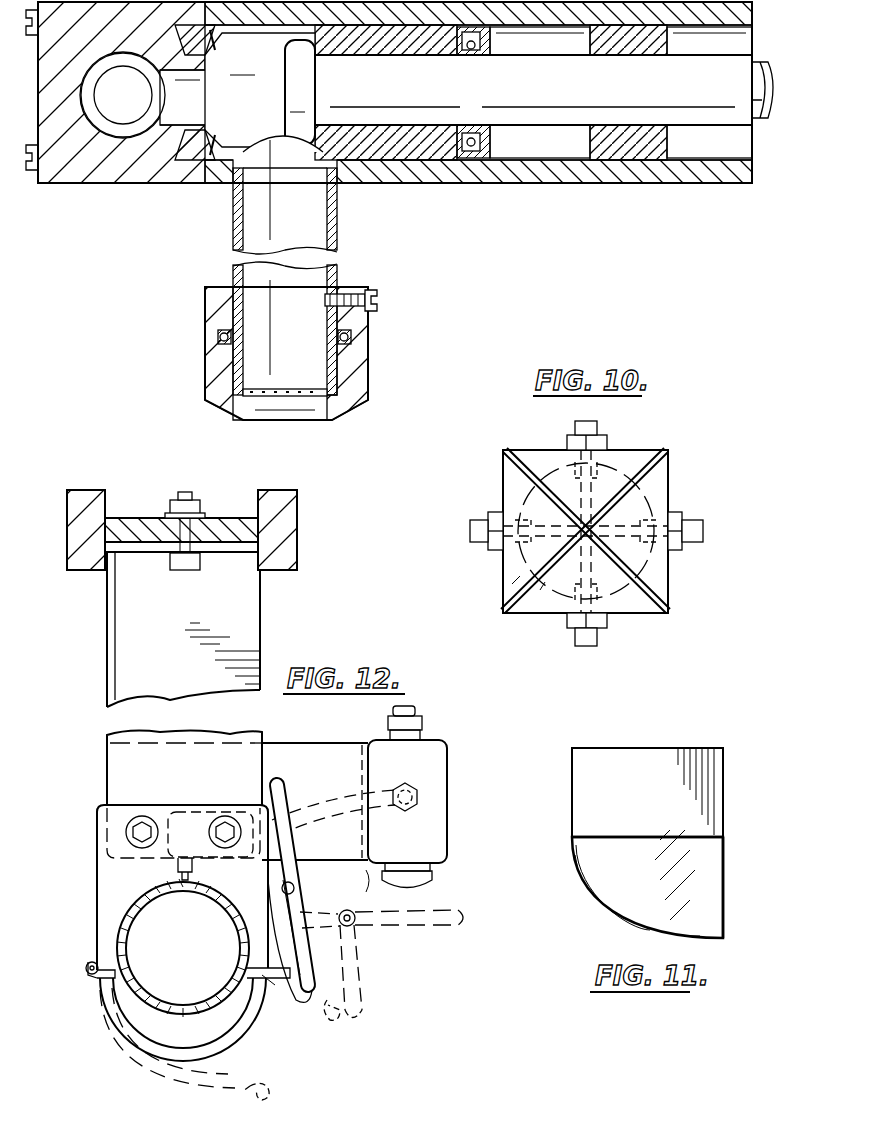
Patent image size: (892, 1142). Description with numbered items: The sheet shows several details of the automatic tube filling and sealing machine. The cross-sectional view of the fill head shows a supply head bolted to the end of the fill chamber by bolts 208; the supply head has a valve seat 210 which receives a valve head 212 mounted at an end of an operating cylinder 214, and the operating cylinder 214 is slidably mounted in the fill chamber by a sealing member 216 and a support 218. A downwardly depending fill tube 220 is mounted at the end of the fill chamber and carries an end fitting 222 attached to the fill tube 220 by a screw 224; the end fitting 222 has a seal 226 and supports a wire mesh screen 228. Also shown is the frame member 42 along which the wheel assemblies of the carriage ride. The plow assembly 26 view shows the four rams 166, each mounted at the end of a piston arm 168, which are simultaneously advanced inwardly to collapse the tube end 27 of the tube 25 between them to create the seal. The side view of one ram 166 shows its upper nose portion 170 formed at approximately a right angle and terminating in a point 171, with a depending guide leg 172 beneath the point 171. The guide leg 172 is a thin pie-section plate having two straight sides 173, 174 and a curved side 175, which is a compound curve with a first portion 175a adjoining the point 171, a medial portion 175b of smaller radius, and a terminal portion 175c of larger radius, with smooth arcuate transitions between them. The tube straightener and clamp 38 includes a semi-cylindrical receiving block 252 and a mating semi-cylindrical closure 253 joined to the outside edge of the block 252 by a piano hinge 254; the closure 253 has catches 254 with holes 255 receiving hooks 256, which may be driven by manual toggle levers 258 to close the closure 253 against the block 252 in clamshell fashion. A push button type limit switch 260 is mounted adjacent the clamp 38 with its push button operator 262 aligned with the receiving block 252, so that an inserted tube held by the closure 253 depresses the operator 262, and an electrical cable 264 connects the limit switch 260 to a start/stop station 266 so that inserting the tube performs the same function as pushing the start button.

In FIG. 9, the bolts 208 is at (38, 183).
In FIG. 9, the valve seat 210 is at (218, 98).
In FIG. 9, the valve head 212 is at (290, 118).
In FIG. 9, the operating cylinder 214 is at (556, 97).
In FIG. 9, the sealing member 216 is at (476, 162).
In FIG. 9, the support 218 is at (606, 162).
In FIG. 9, the fill tube 220 is at (337, 246).
In FIG. 9, the end fitting 222 is at (358, 377).
In FIG. 9, the screw 224 is at (380, 298).
In FIG. 9, the seal 226 is at (214, 338).
In FIG. 9, the wire mesh screen 228 is at (295, 400).
In FIG. 9, the frame member 42 is at (297, 524).
In FIG. 10, the plow assembly 26 is at (703, 493).
In FIG. 10, the ram 166 is at (648, 460).
In FIG. 11, the ram 166 is at (710, 742).
In FIG. 10, the piston arm 168 is at (592, 422).
In FIG. 10, the tube 25 is at (520, 560).
In FIG. 10, the tube end 27 is at (565, 585).
In FIG. 11, the nose portion 170 is at (648, 728).
In FIG. 11, the point 171 is at (572, 798).
In FIG. 11, the guide leg 172 is at (712, 876).
In FIG. 11, the straight side 173 is at (706, 840).
In FIG. 11, the straight side 174 is at (724, 915).
In FIG. 11, the curved side 175 is at (628, 930).
In FIG. 11, the first portion 175a is at (584, 866).
In FIG. 11, the medial portion 175b is at (608, 912).
In FIG. 11, the terminal portion 175c is at (688, 940).
In FIG. 12, the semi-cylindrical receiving block 252 is at (97, 922).
In FIG. 12, the semi-cylindrical closure 253 is at (205, 1025).
In FIG. 12, the piano hinge 254 is at (88, 970).
In FIG. 12, the holes 255 is at (272, 1005).
In FIG. 12, the hooks 256 is at (298, 1020).
In FIG. 12, the manual toggle levers 258 is at (308, 878).
In FIG. 12, the push button type limit switch 260 is at (205, 788).
In FIG. 12, the push button operator 262 is at (170, 878).
In FIG. 12, the electrical cable 264 is at (320, 800).
In FIG. 12, the start/stop station 266 is at (440, 786).
In FIG. 12, the tube straightener and clamp 38 is at (86, 1022).